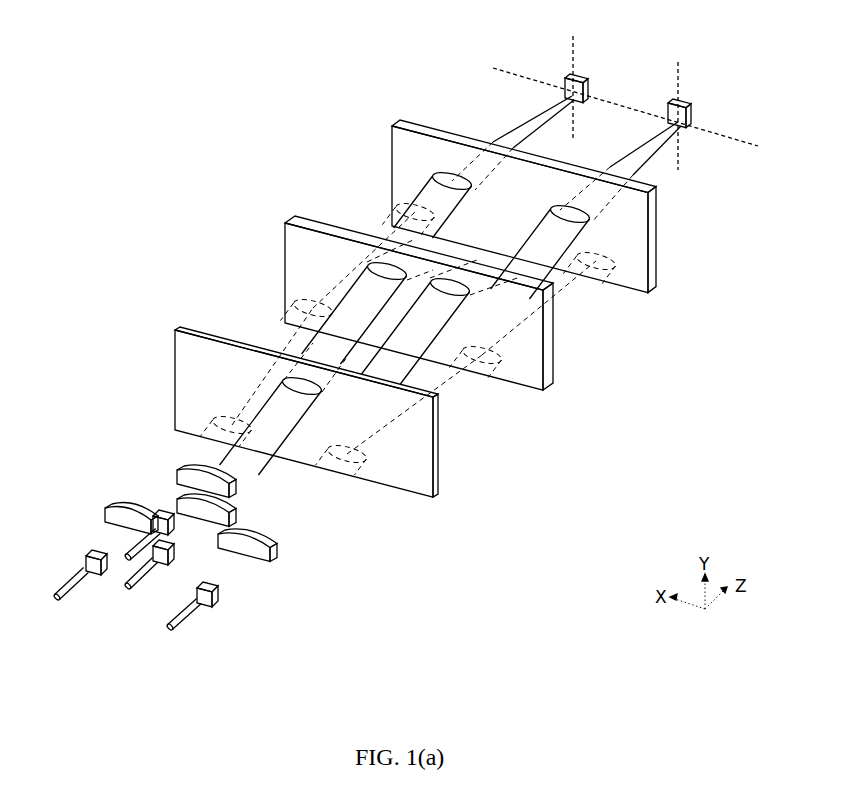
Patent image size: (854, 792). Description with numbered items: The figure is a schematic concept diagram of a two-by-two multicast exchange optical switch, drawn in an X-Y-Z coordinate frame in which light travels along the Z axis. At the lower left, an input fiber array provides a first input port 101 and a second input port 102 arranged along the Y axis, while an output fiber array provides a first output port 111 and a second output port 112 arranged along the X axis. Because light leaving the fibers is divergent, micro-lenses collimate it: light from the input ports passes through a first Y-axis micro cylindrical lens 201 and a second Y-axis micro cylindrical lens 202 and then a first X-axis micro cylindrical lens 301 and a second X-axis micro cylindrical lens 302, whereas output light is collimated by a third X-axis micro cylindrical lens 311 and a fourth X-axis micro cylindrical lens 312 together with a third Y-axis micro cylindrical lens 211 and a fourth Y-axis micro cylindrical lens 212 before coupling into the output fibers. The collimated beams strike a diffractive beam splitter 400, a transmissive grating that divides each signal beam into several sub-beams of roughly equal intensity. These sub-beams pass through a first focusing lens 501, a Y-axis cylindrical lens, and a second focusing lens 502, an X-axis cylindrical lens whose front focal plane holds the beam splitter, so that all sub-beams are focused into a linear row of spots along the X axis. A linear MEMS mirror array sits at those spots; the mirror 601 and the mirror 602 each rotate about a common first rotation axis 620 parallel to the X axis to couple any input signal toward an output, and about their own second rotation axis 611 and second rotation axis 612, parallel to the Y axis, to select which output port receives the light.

The first input port 101 is at (135, 548).
The second input port 102 is at (136, 575).
The first output port 111 is at (174, 620).
The second output port 112 is at (65, 591).
The first Y-axis micro cylindrical lens 201 is at (174, 523).
The second Y-axis micro cylindrical lens 202 is at (176, 553).
The third Y-axis micro cylindrical lens 211 is at (220, 591).
The fourth Y-axis micro cylindrical lens 212 is at (88, 556).
The first X-axis micro cylindrical lens 301 is at (233, 467).
The second X-axis micro cylindrical lens 302 is at (233, 500).
The third X-axis micro cylindrical lens 311 is at (279, 548).
The fourth X-axis micro cylindrical lens 312 is at (128, 508).
The diffractive beam splitter 400 is at (433, 503).
The first focusing lens 501 is at (541, 393).
The second focusing lens 502 is at (645, 297).
The mirror 601 is at (693, 110).
The mirror 602 is at (589, 84).
The second rotation axis 611 is at (681, 70).
The second rotation axis 612 is at (576, 42).
The first rotation axis 620 is at (756, 146).